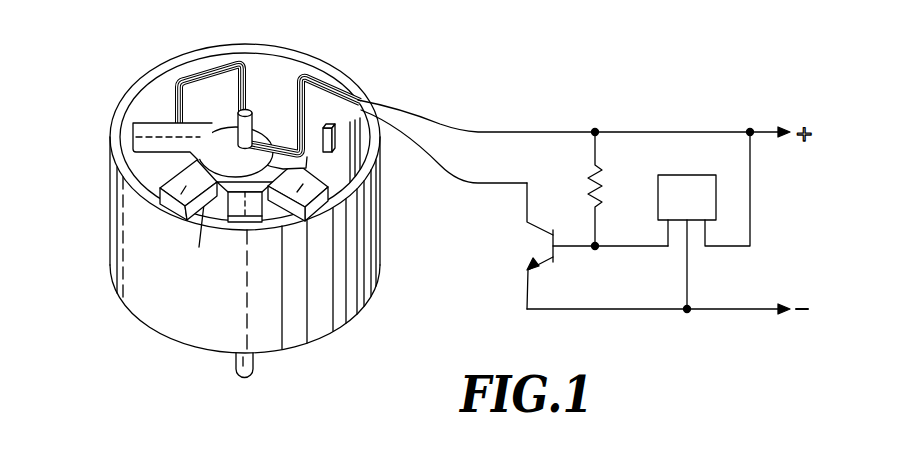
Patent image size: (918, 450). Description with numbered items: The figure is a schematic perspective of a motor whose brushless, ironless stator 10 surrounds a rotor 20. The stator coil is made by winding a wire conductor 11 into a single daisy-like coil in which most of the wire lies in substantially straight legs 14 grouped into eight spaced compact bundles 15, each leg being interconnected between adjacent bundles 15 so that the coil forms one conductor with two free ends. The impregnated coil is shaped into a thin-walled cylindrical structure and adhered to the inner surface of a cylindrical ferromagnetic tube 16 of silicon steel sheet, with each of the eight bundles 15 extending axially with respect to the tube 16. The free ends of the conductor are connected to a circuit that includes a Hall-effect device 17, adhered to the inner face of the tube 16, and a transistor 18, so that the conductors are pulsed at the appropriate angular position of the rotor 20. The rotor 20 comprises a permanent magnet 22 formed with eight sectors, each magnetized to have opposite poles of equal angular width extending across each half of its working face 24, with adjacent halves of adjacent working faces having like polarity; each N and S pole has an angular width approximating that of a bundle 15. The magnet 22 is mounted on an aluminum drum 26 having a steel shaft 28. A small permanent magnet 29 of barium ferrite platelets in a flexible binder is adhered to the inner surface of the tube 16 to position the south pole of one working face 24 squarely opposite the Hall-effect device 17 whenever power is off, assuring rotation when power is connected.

The stator 10 is at (349, 189).
The wire conductor 11 is at (417, 129).
The straight legs 14 is at (303, 78).
The compact bundles 15 is at (296, 102).
The ferromagnetic tube 16 is at (133, 302).
The Hall-effect device 17 is at (687, 177).
The transistor 18 is at (555, 254).
The rotor 20 is at (153, 108).
The permanent magnet 22 is at (265, 225).
The working face 24 is at (314, 214).
The aluminum drum 26 is at (215, 137).
The steel shaft 28 is at (238, 112).
The small permanent magnet 29 is at (334, 123).